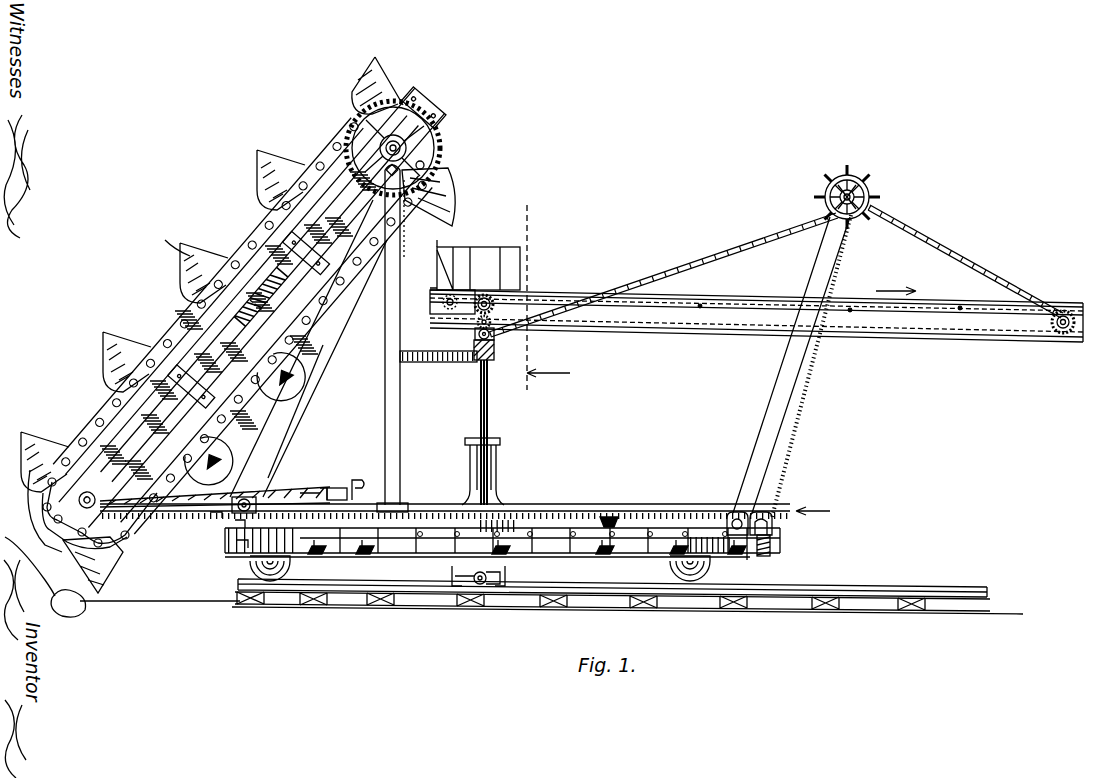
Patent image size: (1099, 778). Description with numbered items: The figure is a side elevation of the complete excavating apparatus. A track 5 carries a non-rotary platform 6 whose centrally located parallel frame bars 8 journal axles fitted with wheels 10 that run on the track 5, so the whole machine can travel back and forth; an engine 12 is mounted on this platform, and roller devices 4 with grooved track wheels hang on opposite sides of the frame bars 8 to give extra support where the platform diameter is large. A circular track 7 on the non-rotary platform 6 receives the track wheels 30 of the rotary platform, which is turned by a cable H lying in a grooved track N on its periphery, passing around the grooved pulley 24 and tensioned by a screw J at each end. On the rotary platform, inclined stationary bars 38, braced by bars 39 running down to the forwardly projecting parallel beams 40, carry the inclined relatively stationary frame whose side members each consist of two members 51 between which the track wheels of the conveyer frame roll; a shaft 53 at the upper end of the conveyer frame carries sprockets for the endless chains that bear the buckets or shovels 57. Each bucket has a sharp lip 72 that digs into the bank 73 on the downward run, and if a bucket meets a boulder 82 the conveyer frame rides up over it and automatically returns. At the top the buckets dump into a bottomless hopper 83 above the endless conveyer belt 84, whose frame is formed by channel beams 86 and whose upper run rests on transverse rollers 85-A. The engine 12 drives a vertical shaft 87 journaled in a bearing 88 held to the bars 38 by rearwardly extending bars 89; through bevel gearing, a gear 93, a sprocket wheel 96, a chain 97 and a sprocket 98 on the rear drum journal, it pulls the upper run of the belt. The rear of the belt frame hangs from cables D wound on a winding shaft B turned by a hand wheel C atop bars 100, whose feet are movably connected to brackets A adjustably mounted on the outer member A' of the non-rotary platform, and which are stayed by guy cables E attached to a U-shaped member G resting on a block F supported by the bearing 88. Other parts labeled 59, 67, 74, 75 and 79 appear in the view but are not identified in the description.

The roller device 4 is at (482, 584).
The track 5 is at (627, 588).
The non-rotary platform 6 is at (235, 528).
The circular track 7 is at (240, 545).
The parallel frame bars 8 is at (541, 292).
The wheels 10 is at (300, 566).
The engine 12 is at (649, 483).
The grooved pulley 24 is at (783, 548).
The track wheels 30 is at (228, 505).
The inclined stationary bars 38 is at (385, 420).
The brace bars 39 is at (322, 383).
The parallel beams 40 is at (215, 512).
The frame members 51 is at (190, 350).
The shaft 53 is at (400, 142).
The buckets or shovels 57 is at (378, 76).
The head sprocket 59 is at (437, 165).
The slot bar 67 is at (245, 320).
The sharp edge or lip 72 is at (105, 590).
The bank 73 is at (30, 563).
The tie rod 74 is at (200, 500).
The brace 75 is at (268, 472).
The lever mechanism 79 is at (345, 480).
The boulder or large rock 82 is at (78, 612).
The bottomless hopper 83 is at (475, 265).
The endless conveyer belt 84 is at (553, 290).
The channel beams 86 is at (733, 318).
The vertically disposed shaft 87 is at (489, 420).
The bearing 88 is at (494, 358).
The rearwardly extending bars 89 is at (452, 367).
The gear 93 is at (479, 330).
The sprocket wheel 96 is at (505, 300).
The chain 97 is at (935, 328).
The sprocket 98 is at (1060, 328).
The upwardly projecting bars 100 is at (776, 403).
The transversely disposed rollers 85-A is at (730, 296).
The brackets A is at (755, 503).
The outer member A' is at (480, 592).
The winding shaft B is at (822, 180).
The hand wheel C is at (862, 185).
The cables D is at (965, 262).
The guy ropes or cables E is at (706, 258).
The block F is at (494, 341).
The U-shaped member G is at (478, 326).
The cable H is at (603, 503).
The screw J is at (385, 505).
The grooved track N is at (643, 503).